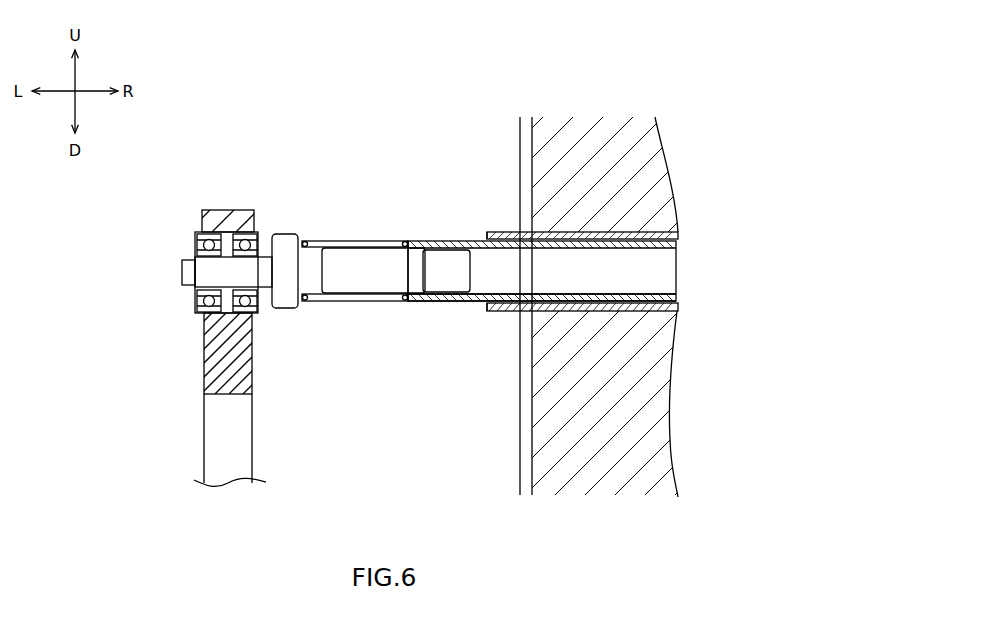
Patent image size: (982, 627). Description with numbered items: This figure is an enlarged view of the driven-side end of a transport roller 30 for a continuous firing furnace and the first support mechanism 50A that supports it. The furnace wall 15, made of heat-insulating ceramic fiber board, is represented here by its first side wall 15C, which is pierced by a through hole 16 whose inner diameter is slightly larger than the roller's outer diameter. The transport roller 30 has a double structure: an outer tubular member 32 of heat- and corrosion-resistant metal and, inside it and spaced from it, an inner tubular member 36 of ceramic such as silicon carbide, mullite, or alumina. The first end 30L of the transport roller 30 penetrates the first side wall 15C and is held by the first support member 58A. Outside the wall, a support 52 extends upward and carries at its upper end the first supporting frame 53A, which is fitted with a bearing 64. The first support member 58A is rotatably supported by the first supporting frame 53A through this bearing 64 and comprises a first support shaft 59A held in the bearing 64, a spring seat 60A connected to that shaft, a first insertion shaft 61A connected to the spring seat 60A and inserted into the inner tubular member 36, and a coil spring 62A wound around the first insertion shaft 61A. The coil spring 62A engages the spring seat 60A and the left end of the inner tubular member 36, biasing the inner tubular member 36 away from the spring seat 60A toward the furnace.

The furnace wall 15 is at (518, 141).
The first side wall 15C is at (612, 131).
The through hole 16 is at (540, 232).
The transport roller 30 is at (413, 231).
The first end of the transport roller 30L is at (413, 298).
The outer tubular member 32 is at (497, 315).
The inner tubular member 36 is at (453, 303).
The first support mechanism 50A is at (196, 348).
The support 52 is at (205, 460).
The first supporting frame 53A is at (217, 377).
The first support member 58A is at (367, 288).
The first support shaft 59A is at (197, 304).
The spring seat 60A is at (280, 310).
The first insertion shaft 61A is at (370, 286).
The coil spring 62A is at (342, 240).
The bearing 64 is at (194, 237).